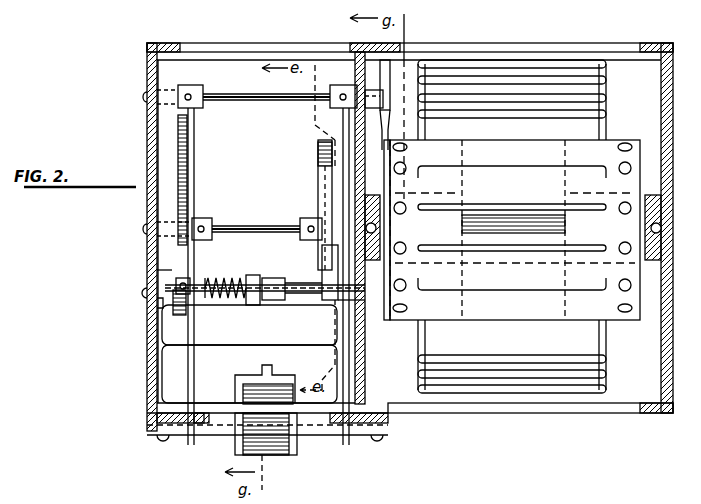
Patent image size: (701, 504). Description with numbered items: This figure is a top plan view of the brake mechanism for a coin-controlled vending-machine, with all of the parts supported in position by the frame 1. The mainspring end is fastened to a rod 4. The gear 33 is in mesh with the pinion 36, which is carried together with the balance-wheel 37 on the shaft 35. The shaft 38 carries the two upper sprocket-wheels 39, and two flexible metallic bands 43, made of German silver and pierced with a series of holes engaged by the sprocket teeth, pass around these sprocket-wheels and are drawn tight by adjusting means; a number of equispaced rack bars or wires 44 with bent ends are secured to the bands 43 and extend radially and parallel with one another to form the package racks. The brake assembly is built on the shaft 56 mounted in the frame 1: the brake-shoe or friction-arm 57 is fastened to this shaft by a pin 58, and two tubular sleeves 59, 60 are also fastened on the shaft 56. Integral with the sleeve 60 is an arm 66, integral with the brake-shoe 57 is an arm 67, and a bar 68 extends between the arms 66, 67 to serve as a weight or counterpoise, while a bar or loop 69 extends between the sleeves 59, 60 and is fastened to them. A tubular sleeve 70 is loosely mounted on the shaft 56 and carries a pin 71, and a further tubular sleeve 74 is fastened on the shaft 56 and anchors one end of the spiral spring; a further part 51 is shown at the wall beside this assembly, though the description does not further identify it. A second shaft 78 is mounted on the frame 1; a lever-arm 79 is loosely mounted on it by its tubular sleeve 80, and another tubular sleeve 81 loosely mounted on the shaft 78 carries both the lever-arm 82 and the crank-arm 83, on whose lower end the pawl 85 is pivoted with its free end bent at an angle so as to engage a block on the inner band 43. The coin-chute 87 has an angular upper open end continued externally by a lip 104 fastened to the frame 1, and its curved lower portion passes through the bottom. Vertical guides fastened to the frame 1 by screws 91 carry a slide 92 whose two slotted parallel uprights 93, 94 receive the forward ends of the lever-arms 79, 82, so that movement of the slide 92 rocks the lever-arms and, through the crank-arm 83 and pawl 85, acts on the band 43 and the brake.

The frame 1 is at (150, 125).
The rod 4 is at (446, 262).
The gear 33 is at (168, 168).
The rod 35 is at (258, 222).
The pinion 36 is at (196, 216).
The balance-wheel 37 is at (318, 190).
The shaft 38 is at (510, 222).
The upper sprocket-wheels 39 is at (400, 316).
The flexible metallic bands 43 is at (446, 192).
The rack bars 44 is at (527, 322).
The pin 51 is at (150, 293).
The shaft 56 is at (302, 285).
The brake-shoe 57 is at (322, 258).
The pin 58 is at (325, 298).
The tubular sleeve 59 is at (273, 300).
The tubular sleeve 60 is at (150, 268).
The arm 66 is at (160, 306).
The arm 67 is at (334, 306).
The bar 68 is at (236, 340).
The bar or loop 69 is at (256, 283).
The tubular sleeve 70 is at (195, 298).
The pin 71 is at (178, 280).
The tubular sleeve 74 is at (244, 280).
The shaft 78 is at (266, 110).
The lever-arm 79 is at (195, 137).
The tubular sleeve 80 is at (198, 90).
The tubular sleeve 81 is at (340, 88).
The lever-arm 82 is at (335, 122).
The crank-arm 83 is at (432, 36).
The pawl 85 is at (450, 187).
The coin-chute 87 is at (274, 378).
The screws 91 is at (270, 450).
The slide 92 is at (282, 428).
The upright 93 is at (150, 426).
The upright 94 is at (200, 436).
The lip 104 is at (278, 456).